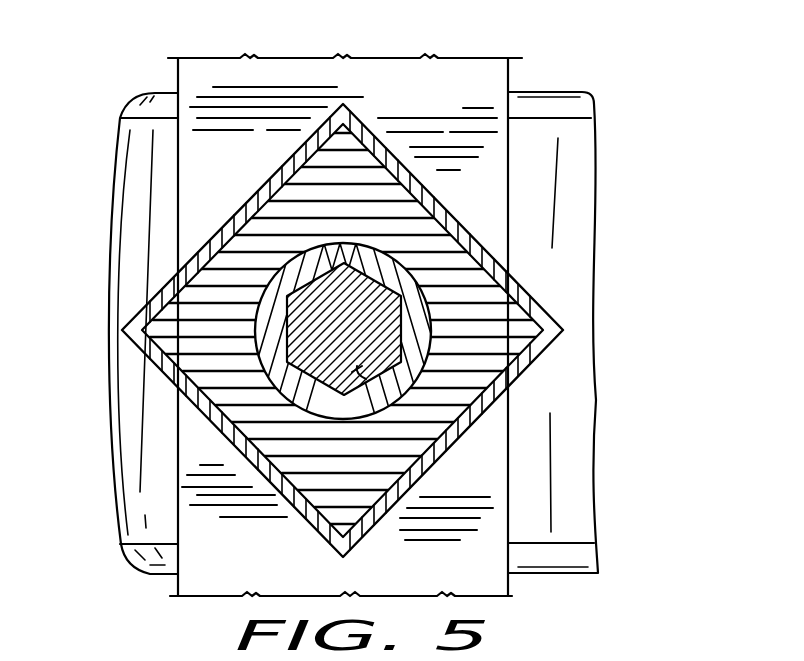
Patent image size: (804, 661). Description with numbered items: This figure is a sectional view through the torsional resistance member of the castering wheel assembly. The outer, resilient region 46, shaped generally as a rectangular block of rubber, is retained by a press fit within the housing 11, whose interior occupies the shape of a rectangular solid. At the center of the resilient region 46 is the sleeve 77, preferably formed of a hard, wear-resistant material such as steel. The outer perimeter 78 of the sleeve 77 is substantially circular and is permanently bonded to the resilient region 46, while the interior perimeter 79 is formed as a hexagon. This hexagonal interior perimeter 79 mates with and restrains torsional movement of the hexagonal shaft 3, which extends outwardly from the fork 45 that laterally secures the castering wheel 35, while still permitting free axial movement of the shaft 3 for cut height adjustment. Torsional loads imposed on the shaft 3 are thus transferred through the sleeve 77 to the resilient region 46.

The hexagonal shaft 3 is at (362, 305).
The housing 11 is at (348, 114).
The castering wheel 35 is at (138, 500).
The fork 45 is at (492, 70).
The resilient region 46 is at (523, 331).
The sleeve 77 is at (357, 368).
The outer perimeter of sleeve 78 is at (327, 245).
The interior perimeter of sleeve 79 is at (358, 370).